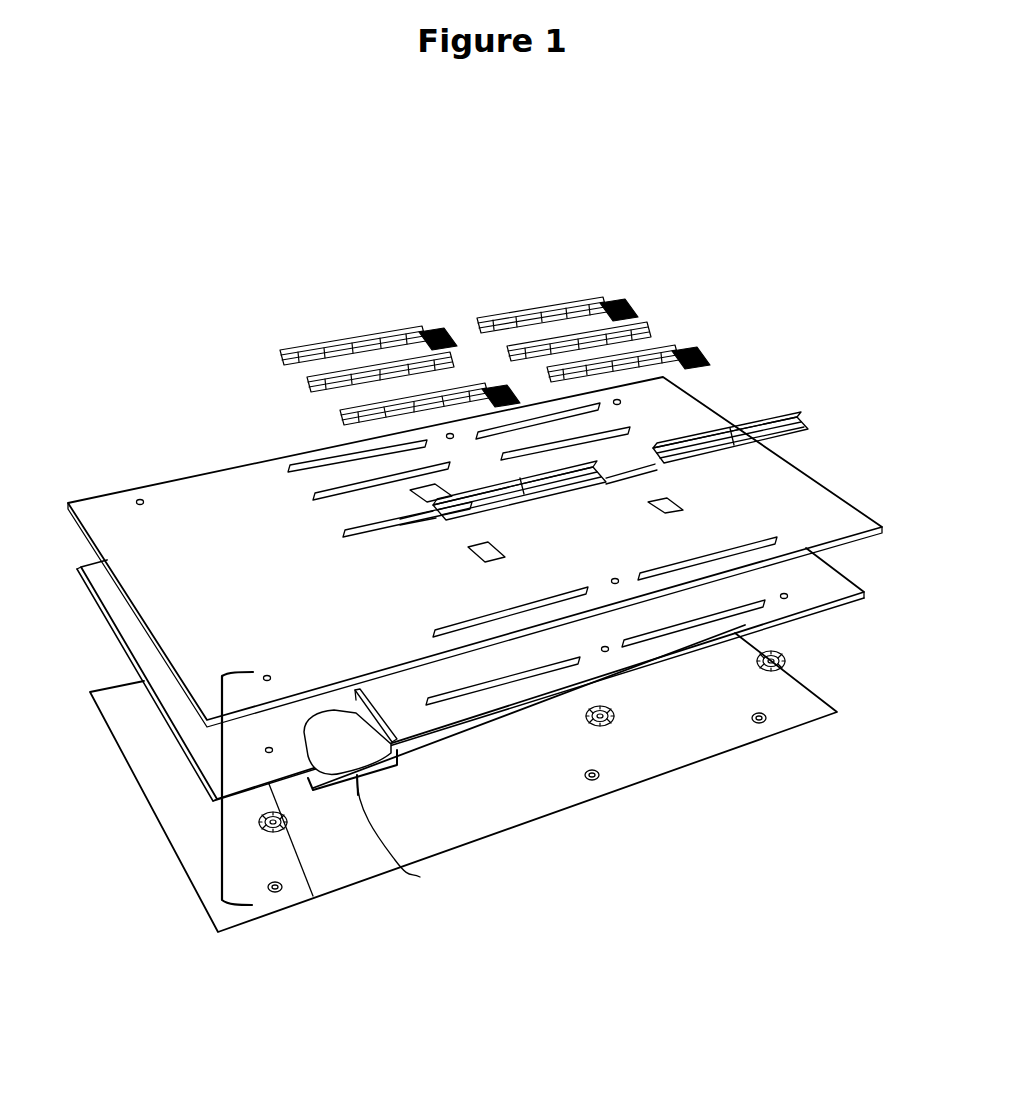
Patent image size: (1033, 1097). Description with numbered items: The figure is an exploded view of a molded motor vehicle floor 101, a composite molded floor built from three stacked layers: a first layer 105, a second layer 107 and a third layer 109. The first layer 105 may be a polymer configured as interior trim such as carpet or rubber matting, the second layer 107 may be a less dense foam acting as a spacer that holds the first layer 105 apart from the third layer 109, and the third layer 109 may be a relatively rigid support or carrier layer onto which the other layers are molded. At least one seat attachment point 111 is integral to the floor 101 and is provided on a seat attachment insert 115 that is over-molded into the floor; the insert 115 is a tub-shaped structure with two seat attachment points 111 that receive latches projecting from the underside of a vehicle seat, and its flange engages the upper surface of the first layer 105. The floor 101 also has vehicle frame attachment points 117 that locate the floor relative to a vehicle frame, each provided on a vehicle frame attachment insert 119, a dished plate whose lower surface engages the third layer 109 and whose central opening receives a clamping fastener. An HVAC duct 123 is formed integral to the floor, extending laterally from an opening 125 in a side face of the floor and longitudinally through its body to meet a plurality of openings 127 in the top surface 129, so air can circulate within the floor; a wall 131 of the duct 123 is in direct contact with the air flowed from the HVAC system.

The molded motor vehicle floor 101 is at (164, 317).
The first layer 105 is at (827, 517).
The second layer 107 is at (827, 587).
The third layer 109 is at (793, 708).
The seat attachment point 111 is at (682, 460).
The seat attachment insert 115 is at (757, 423).
The vehicle frame attachment point 117 is at (222, 735).
The vehicle frame attachment insert 119 is at (252, 822).
The HVAC duct 123 is at (458, 768).
The opening 125 is at (357, 777).
The openings 127 is at (468, 561).
The top surface 129 is at (236, 500).
The wall 131 is at (360, 718).